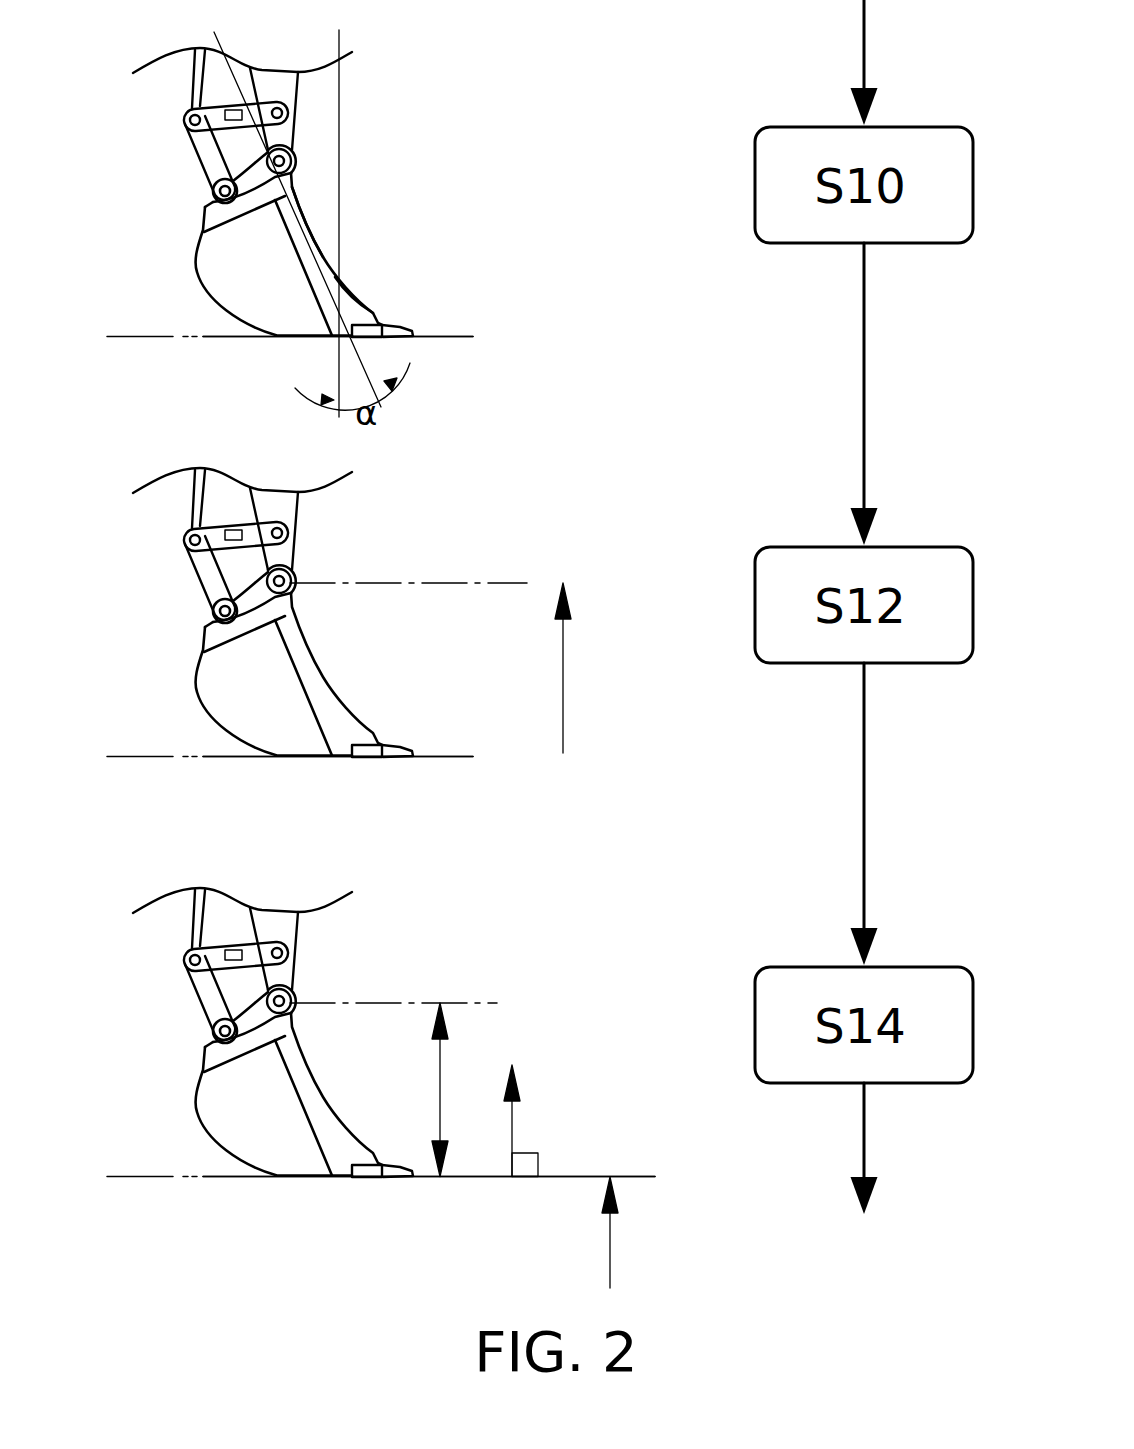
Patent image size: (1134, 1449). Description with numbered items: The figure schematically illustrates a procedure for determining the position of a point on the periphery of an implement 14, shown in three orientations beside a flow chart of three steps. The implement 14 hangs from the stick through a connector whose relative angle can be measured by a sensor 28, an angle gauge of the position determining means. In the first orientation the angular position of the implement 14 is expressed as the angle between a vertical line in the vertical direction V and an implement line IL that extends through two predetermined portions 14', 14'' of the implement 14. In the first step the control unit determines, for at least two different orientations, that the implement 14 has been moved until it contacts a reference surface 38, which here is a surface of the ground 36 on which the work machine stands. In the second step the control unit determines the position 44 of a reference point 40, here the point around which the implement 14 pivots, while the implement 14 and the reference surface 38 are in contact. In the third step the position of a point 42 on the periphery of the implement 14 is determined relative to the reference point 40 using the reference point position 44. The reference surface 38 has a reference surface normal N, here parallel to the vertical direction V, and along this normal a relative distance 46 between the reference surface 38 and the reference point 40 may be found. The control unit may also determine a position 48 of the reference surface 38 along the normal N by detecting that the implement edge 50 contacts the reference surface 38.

The implement 14 is at (234, 660).
The predetermined portion of the implement 14' is at (367, 197).
The predetermined portion of the implement 14'' is at (414, 273).
The sensor 28 is at (230, 107).
The ground 36 is at (172, 355).
The reference surface 38 is at (120, 338).
The reference point 40 is at (286, 582).
The point on the periphery of the implement 42 is at (357, 1180).
The position of the reference point 44 is at (563, 684).
The relative distance 46 is at (440, 1083).
The position of the reference surface 48 is at (612, 1257).
The implement edge 50 is at (393, 1180).
The implement line IL is at (223, 42).
The vertical direction V is at (340, 43).
The reference surface normal N is at (513, 1134).